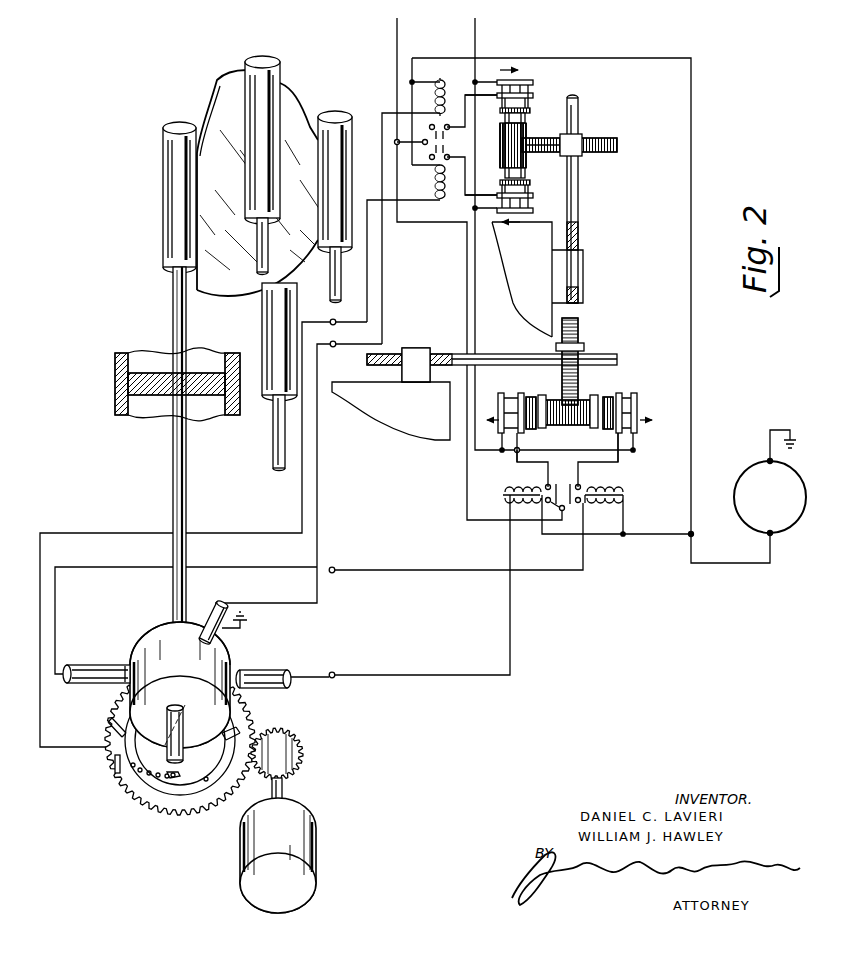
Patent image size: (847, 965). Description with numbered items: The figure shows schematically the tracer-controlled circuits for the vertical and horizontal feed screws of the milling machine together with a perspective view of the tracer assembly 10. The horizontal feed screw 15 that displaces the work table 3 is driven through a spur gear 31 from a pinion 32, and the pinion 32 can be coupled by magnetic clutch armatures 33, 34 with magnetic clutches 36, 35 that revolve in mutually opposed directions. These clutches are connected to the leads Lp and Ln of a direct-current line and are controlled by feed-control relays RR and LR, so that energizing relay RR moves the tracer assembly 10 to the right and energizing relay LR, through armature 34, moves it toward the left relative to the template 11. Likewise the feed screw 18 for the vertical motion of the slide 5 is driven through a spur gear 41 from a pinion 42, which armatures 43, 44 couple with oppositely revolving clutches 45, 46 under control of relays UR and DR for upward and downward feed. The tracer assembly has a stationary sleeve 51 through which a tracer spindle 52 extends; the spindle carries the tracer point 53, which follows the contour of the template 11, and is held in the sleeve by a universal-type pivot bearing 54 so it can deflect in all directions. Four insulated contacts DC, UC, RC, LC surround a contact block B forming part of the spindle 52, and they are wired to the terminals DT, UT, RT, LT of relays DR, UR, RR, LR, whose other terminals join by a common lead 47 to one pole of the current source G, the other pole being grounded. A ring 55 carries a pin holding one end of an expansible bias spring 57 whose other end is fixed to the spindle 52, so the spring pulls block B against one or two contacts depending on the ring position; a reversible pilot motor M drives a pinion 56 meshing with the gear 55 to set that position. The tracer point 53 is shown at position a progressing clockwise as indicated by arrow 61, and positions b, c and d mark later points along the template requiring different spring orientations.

The template 11 is at (235, 80).
The arrow 61 is at (206, 108).
The tracer point position a is at (211, 91).
The tracer point position b is at (306, 87).
The tracer point position c is at (366, 149).
The tracer point position d is at (239, 305).
The tracer point 53 is at (172, 250).
The tracer spindle 52 is at (173, 338).
The universal-type pivot bearing 54 is at (158, 383).
The stationary sleeve 51 is at (115, 388).
The tracer assembly 10 is at (161, 455).
The terminal of relay RR RT is at (336, 320).
The terminal of relay LR LT is at (333, 347).
The terminal of relay DR DT is at (332, 567).
The terminal of relay UR UT is at (332, 672).
The direct-current line lead Ln is at (397, 50).
The direct-current line lead Lp is at (476, 50).
The feed-control relay LR is at (423, 97).
The feed-control relay RR is at (423, 180).
The feed-control relay UR is at (508, 487).
The feed-control relay DR is at (616, 487).
The common lead 47 is at (691, 291).
The current source G is at (770, 483).
The magnetic clutch 35 is at (534, 97).
The magnetic clutch armature 34 is at (526, 118).
The pinion 32 is at (503, 150).
The magnetic clutch armature 33 is at (526, 172).
The magnetic clutch 36 is at (534, 200).
The spur gear 31 is at (605, 138).
The horizontal feed screw 15 is at (580, 178).
The work table 3 is at (514, 303).
The vertical feed screw 18 is at (432, 354).
The slide 5 is at (402, 425).
The spur gear 41 is at (579, 337).
The pinion 42 is at (581, 427).
The magnetic clutch armature 43 is at (533, 385).
The magnetic clutch armature 44 is at (587, 385).
The magnetic clutch 45 is at (502, 396).
The magnetic clutch 46 is at (630, 394).
The contact block B is at (148, 648).
The tracer contact DC is at (107, 667).
The tracer contact LC is at (206, 609).
The tracer contact UC is at (251, 671).
The tracer contact RC is at (153, 733).
The ring 55 is at (130, 790).
The bias spring 57 is at (168, 778).
The pinion 56 is at (291, 760).
The pilot motor M is at (298, 843).